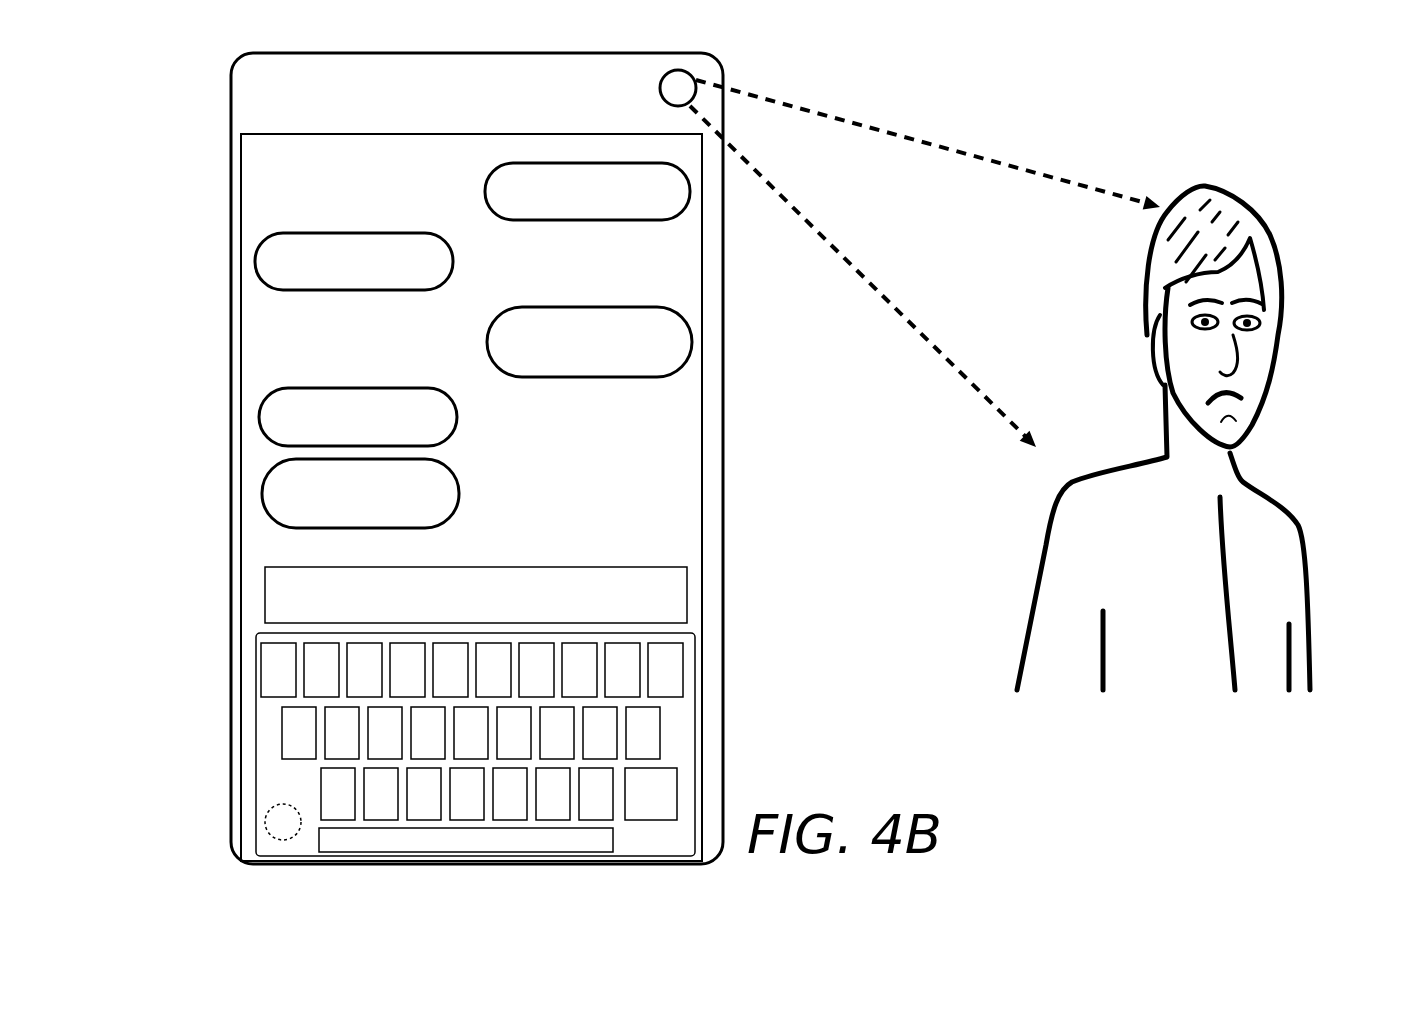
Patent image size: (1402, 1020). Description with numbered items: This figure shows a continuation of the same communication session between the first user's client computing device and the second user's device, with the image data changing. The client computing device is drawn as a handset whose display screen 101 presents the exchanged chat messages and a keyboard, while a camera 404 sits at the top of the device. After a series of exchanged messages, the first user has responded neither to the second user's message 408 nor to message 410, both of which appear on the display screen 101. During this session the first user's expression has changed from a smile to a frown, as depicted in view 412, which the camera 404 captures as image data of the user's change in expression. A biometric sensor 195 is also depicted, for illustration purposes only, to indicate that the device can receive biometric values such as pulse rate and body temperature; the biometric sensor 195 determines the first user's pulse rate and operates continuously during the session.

The display screen 101 is at (247, 84).
The camera 404 is at (660, 76).
The message 408 is at (261, 416).
The message 410 is at (264, 493).
The view 412 is at (1053, 297).
The biometric sensor 195 is at (258, 803).